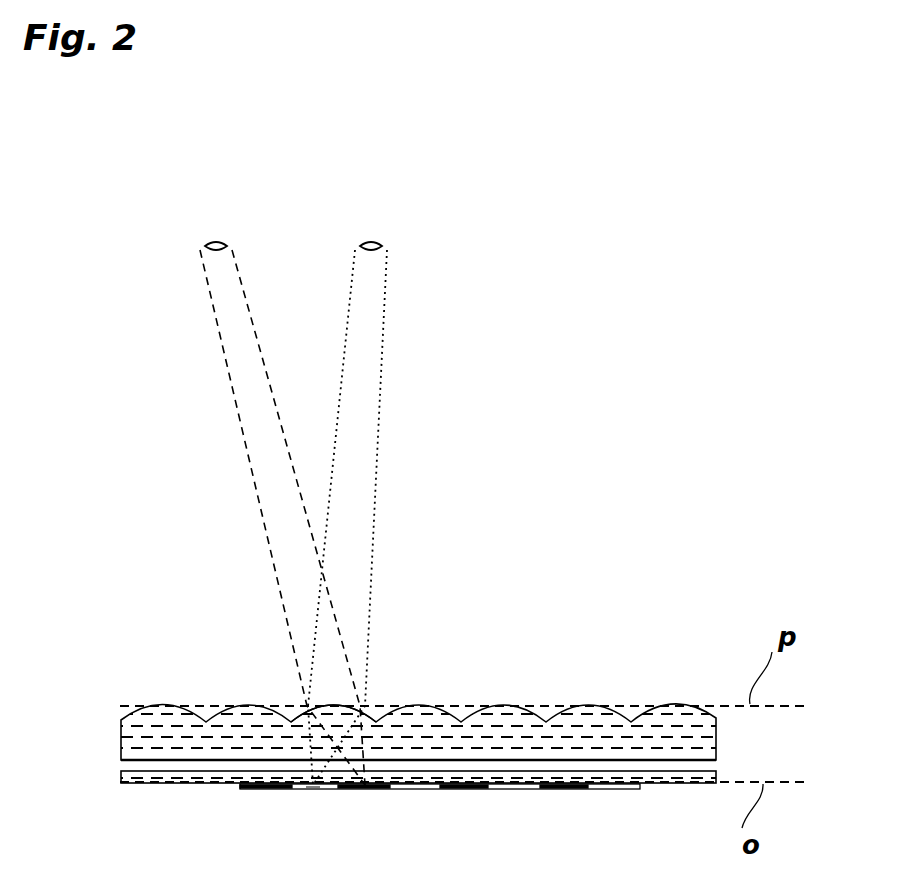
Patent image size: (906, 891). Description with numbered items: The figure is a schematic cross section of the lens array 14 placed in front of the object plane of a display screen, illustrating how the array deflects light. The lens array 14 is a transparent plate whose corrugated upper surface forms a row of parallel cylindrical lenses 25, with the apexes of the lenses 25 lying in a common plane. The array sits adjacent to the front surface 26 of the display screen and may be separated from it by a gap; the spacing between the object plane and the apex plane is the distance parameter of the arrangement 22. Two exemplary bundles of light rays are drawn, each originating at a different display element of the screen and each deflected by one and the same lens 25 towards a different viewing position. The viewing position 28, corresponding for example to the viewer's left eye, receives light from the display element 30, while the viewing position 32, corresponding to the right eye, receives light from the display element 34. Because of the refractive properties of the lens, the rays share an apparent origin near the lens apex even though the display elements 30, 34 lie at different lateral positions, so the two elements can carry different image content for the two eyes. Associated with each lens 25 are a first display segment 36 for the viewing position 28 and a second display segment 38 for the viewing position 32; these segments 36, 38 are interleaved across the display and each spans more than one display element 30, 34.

The lens array 14 is at (120, 743).
The imaging device 22 is at (593, 553).
The cylindrical lens 25 is at (352, 694).
The front surface 26 is at (120, 778).
The viewing position 28 is at (370, 240).
The display element 30 is at (313, 797).
The viewing position 32 is at (216, 240).
The display element 34 is at (367, 797).
The first display segment 36 is at (310, 790).
The second display segment 38 is at (370, 790).